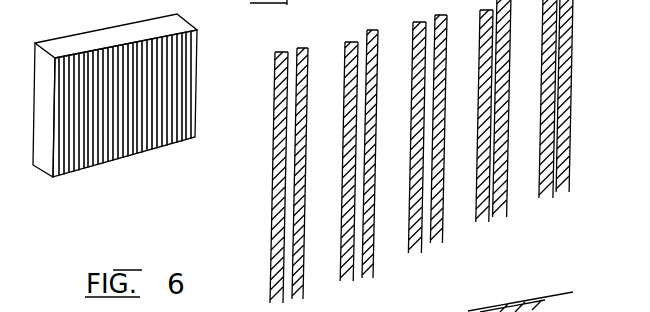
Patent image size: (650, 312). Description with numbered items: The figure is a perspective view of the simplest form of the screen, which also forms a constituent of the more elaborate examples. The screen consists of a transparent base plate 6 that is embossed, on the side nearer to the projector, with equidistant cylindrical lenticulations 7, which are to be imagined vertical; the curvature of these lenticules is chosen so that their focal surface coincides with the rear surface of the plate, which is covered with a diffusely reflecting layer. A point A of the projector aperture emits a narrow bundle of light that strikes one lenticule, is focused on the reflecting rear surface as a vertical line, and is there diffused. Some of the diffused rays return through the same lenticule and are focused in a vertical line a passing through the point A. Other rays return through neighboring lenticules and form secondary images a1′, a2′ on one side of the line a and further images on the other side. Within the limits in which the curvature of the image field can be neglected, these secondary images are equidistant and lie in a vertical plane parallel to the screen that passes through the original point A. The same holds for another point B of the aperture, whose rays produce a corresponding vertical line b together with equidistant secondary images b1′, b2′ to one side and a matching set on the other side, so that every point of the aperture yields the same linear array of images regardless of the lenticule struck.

The base plate 6 is at (180, 23).
The cylindrical lenticulations 7 is at (182, 98).
The point of the projector aperture A is at (443, 125).
The another point of the aperture B is at (451, 126).
The vertical line image a is at (410, 140).
The vertical line image b is at (442, 129).
The first secondary image a1′ is at (340, 165).
The second secondary image a2′ is at (270, 179).
The first secondary image b1′ is at (377, 154).
The second secondary image b2′ is at (307, 173).